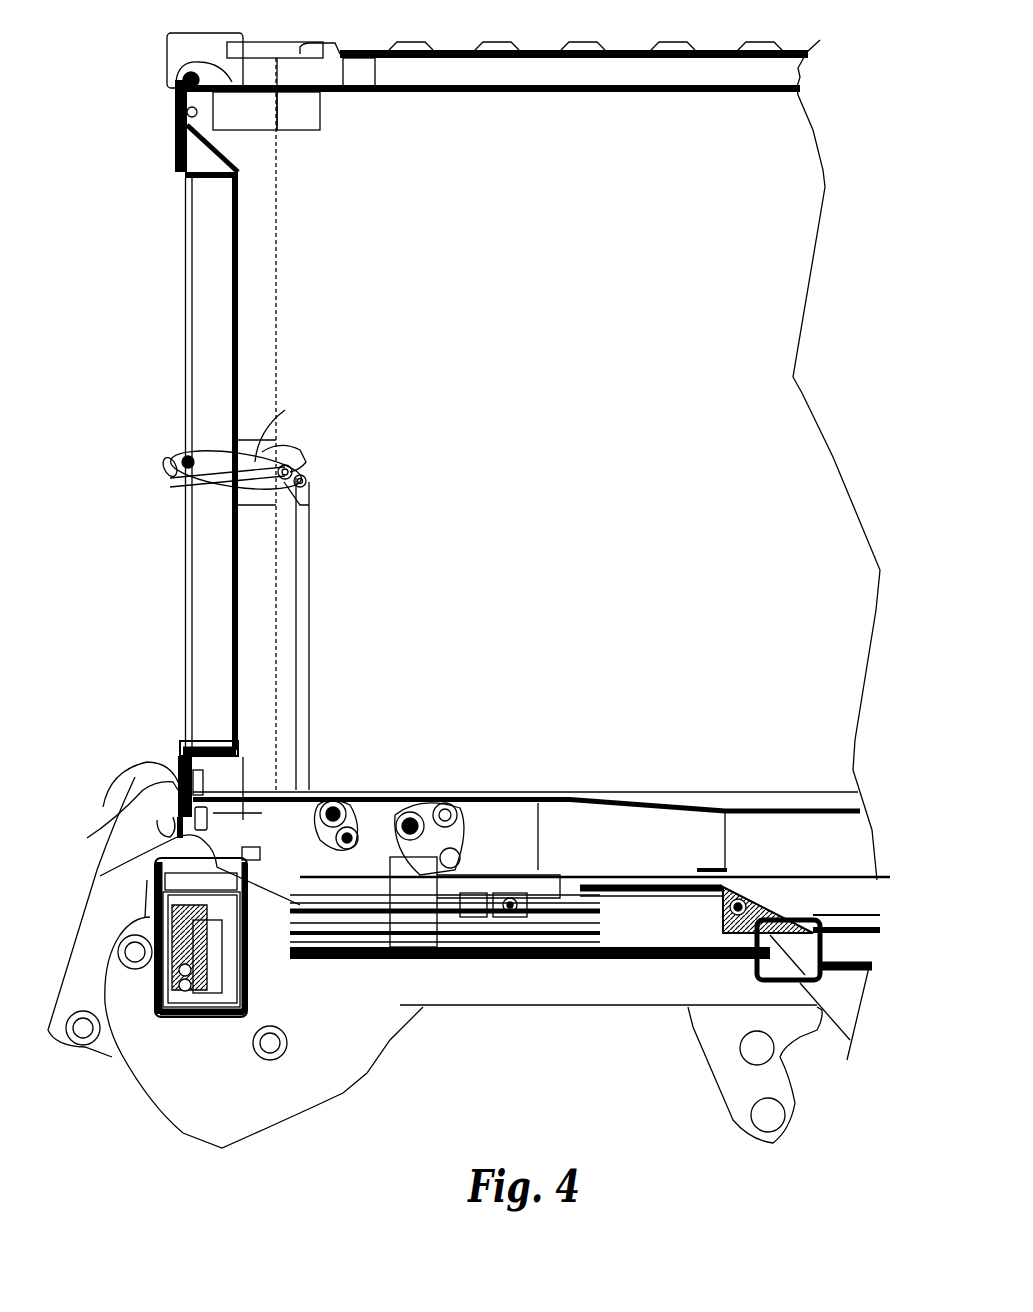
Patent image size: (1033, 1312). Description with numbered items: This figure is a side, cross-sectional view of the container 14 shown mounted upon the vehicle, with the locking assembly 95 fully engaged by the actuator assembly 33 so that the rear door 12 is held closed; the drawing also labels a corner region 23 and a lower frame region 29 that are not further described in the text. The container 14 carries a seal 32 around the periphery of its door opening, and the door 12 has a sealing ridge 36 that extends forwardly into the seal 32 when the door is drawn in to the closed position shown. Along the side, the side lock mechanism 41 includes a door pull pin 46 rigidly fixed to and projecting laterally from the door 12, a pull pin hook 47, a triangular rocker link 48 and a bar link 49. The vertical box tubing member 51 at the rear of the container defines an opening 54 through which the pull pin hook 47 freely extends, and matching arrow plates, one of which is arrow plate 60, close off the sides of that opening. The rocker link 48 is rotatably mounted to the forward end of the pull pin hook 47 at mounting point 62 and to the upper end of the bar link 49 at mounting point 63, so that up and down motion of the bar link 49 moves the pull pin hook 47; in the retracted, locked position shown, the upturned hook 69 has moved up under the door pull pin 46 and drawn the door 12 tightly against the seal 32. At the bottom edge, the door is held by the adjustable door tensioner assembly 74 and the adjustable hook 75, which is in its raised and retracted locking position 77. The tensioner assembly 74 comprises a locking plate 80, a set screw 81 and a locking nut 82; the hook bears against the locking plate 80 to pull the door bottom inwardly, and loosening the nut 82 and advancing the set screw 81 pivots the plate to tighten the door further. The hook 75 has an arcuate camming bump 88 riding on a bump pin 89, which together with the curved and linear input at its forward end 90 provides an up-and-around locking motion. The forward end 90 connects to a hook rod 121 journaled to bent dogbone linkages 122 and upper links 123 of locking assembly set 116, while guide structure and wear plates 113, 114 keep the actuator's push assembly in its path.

The rear door 12 is at (172, 229).
The container 14 is at (602, 35).
The corner assembly 23 is at (107, 122).
The base bracket 29 is at (487, 1012).
The seal 32 is at (210, 116).
The actuator assembly 33 is at (578, 985).
The sealing ridge 36 is at (175, 157).
The side lock mechanism 41 is at (375, 465).
The door pull pin 46 is at (200, 445).
The pull pin hook 47 is at (255, 460).
The rocker link 48 is at (300, 474).
The bar link 49 is at (308, 598).
The vertical box tubing member 51 is at (263, 210).
The opening 54 is at (290, 460).
The arrow plate 60 is at (290, 498).
The second mounting point 62 is at (300, 480).
The third mounting point 63 is at (308, 486).
The upturned hook 69 is at (165, 467).
The door tensioner assembly 74 is at (163, 738).
The adjustable hook 75 is at (245, 810).
The raised and retracted locking position 77 is at (90, 768).
The locking plate 80 is at (177, 780).
The set screw 81 is at (150, 833).
The locking nut 82 is at (103, 795).
The arcuate camming bump 88 is at (300, 925).
The bump pin 89 is at (100, 876).
The forward end of hook 90 is at (280, 830).
The locking assembly 95 is at (420, 769).
The guide structure and wear plate 113 is at (342, 1000).
The guide structure and wear plate 114 is at (275, 935).
The locking assembly set 116 is at (510, 757).
The hook rod 121 is at (397, 935).
The bent dogbone linkage 122 is at (380, 830).
The upper link 123 is at (355, 812).